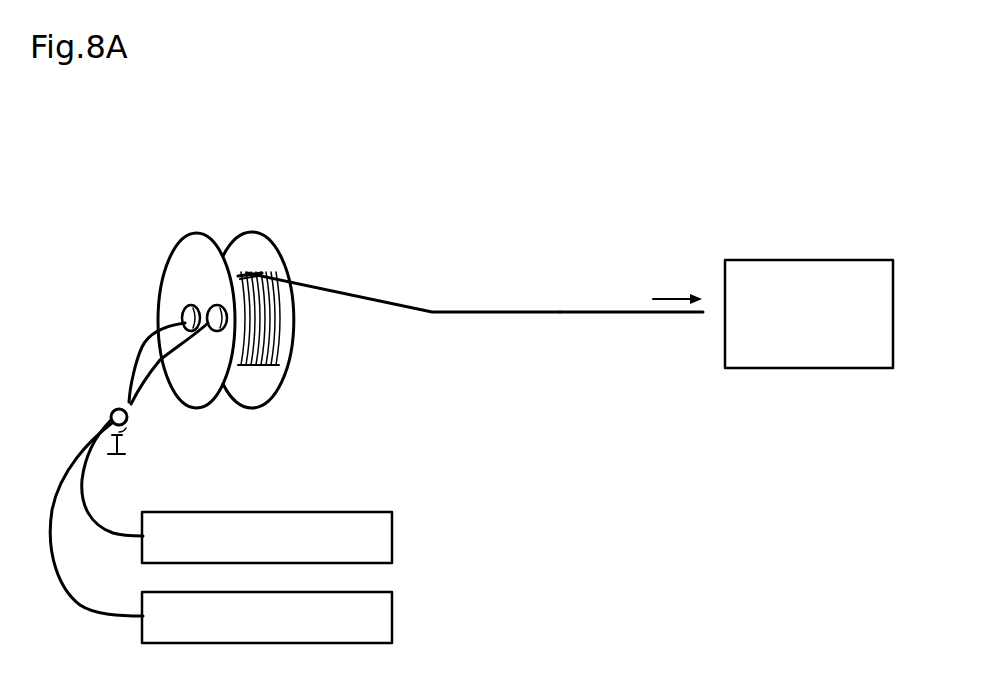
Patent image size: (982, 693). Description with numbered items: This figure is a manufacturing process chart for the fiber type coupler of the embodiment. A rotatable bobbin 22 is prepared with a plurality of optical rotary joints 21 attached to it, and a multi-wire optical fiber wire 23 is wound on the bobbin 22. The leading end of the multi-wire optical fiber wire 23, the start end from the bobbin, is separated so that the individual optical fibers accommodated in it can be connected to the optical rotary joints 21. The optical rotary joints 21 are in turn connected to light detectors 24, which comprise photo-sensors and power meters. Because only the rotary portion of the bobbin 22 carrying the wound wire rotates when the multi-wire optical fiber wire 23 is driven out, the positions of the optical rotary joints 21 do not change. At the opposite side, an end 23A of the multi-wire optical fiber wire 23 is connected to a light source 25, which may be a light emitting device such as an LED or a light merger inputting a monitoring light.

The optical rotary joint 21 is at (218, 304).
The rotatable bobbin 22 is at (182, 318).
The multi-wire optical fiber wire 23 is at (432, 304).
The end of the multi-wire optical fiber wire 23A is at (672, 320).
The light detector 24 is at (392, 537).
The light source 25 is at (808, 368).